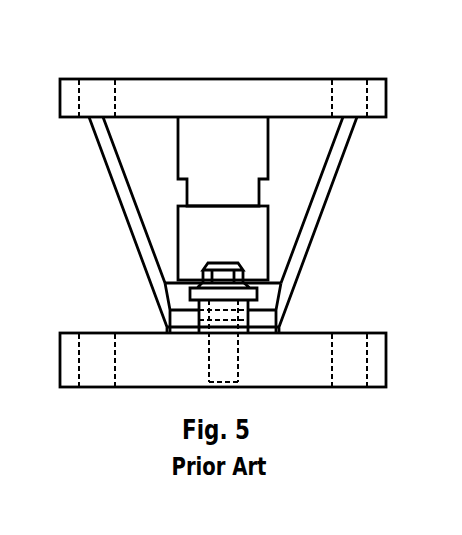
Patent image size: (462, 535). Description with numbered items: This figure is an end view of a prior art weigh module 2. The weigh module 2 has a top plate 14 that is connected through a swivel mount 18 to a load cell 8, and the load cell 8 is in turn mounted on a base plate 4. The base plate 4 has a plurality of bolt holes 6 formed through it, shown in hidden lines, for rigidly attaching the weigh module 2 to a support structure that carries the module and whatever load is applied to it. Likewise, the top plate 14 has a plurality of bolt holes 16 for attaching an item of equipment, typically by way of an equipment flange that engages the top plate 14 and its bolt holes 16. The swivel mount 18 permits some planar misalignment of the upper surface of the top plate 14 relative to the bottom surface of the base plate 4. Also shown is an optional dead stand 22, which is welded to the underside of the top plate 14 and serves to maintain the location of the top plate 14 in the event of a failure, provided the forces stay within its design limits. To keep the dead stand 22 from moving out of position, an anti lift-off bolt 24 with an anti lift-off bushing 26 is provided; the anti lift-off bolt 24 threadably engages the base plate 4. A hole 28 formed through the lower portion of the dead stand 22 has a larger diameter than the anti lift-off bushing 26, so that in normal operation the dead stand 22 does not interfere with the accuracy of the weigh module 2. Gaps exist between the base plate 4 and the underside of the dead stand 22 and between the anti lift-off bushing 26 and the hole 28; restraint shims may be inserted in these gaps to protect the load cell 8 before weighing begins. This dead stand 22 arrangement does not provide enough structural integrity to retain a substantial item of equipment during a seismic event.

The weigh module 2 is at (19, 255).
The base plate 4 is at (170, 388).
The bolt holes 6 is at (115, 373).
The load cell 8 is at (268, 218).
The top plate 14 is at (386, 93).
The bolt holes 16 is at (113, 100).
The swivel mount 18 is at (268, 152).
The dead stand 22 is at (322, 217).
The anti lift-off bolt 24 is at (213, 264).
The anti lift-off bushing 26 is at (258, 290).
The hole 28 is at (255, 317).